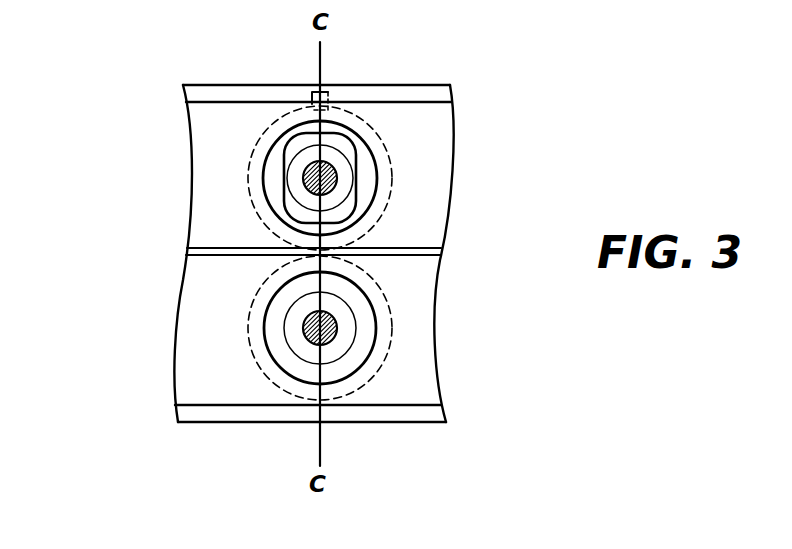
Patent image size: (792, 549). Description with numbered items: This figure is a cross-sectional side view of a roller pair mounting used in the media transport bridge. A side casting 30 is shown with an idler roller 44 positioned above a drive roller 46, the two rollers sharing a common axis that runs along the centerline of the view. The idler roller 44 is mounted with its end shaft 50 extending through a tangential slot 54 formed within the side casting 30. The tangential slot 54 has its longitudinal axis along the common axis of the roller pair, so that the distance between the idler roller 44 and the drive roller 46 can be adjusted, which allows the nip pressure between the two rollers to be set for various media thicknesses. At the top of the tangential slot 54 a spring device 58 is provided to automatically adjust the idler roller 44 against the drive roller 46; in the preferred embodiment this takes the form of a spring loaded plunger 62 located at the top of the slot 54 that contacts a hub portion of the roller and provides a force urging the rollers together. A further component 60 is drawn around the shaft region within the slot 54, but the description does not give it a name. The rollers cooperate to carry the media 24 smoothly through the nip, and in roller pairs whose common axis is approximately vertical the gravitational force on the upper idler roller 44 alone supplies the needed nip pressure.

The side casting 30 is at (208, 169).
The media 24 is at (430, 253).
The idler roller 44 is at (392, 178).
The drive roller 46 is at (392, 339).
The end shaft 50 is at (337, 172).
The tangential slot 54 is at (356, 200).
The sleeve 60 is at (297, 146).
The spring device 58 is at (350, 107).
The spring loaded plunger 62 is at (320, 101).